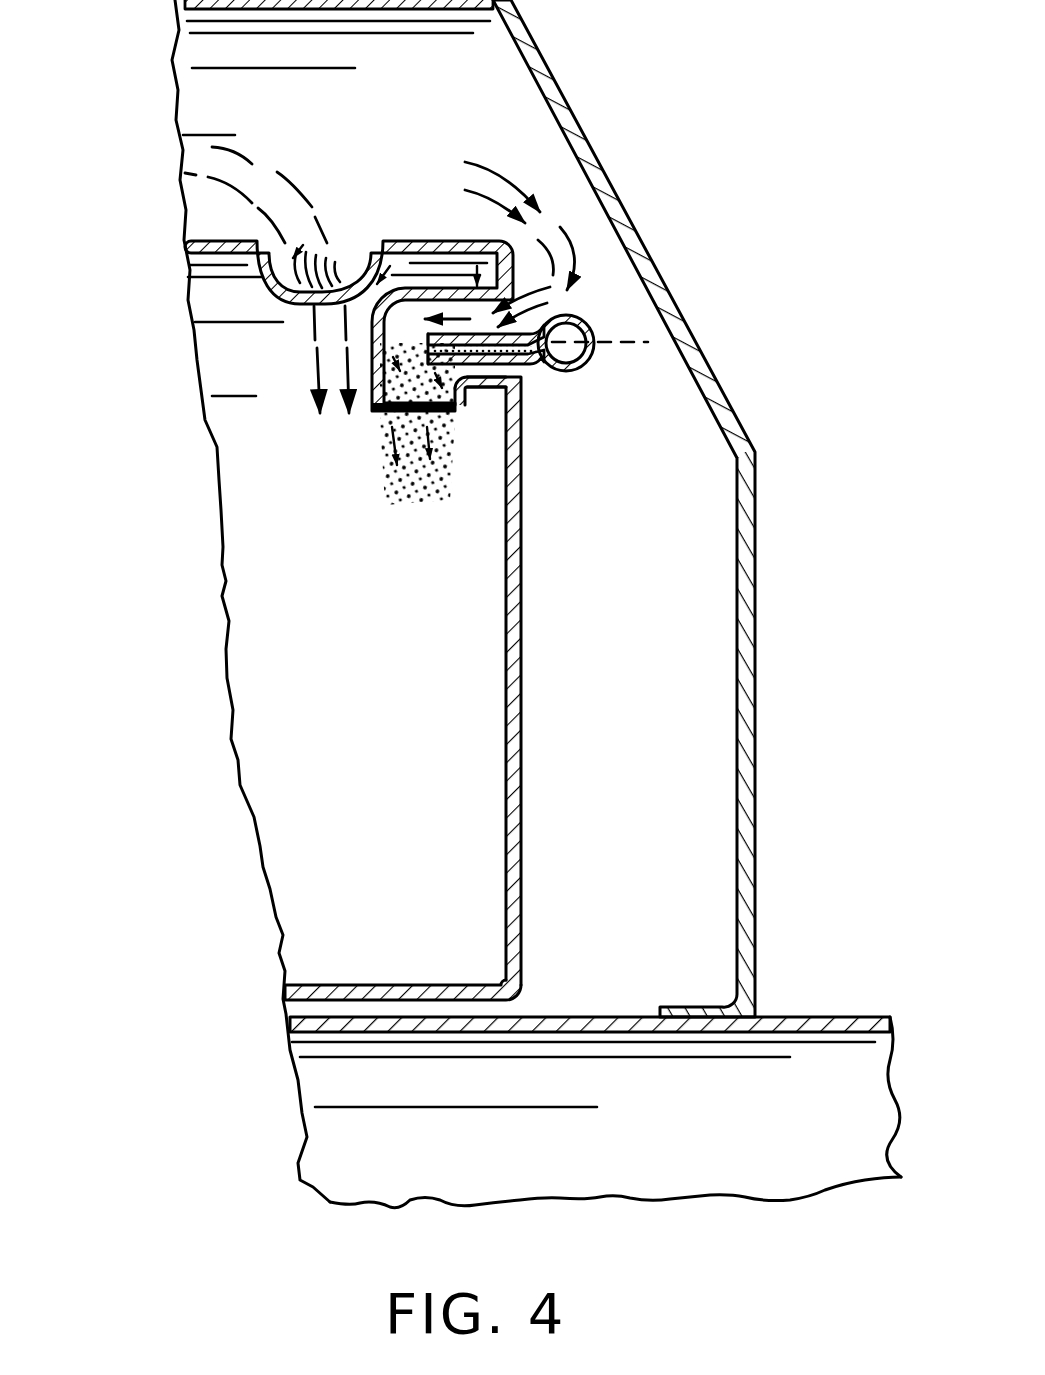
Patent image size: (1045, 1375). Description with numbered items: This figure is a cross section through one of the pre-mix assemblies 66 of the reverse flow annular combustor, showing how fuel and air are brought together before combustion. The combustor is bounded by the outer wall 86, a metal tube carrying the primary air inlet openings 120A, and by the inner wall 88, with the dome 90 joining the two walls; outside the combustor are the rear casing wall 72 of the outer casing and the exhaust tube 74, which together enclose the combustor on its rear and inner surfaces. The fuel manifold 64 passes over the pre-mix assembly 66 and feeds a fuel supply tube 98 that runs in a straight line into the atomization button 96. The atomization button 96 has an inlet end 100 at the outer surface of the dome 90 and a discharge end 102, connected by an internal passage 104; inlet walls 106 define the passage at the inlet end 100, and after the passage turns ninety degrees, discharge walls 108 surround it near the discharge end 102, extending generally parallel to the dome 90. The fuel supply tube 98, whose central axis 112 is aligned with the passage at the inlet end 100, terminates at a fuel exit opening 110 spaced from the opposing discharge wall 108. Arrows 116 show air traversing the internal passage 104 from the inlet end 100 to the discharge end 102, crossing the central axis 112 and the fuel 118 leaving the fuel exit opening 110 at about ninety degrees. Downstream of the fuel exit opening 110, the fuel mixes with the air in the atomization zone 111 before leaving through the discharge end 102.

The fuel manifold 64 is at (586, 323).
The pre-mix assembly 66 is at (483, 332).
The rear casing wall 72 is at (758, 772).
The exhaust tube 74 is at (808, 1017).
The outer wall 86 is at (200, 296).
The inner wall 88 is at (357, 988).
The dome 90 is at (517, 480).
The atomization button 96 is at (352, 262).
The fuel supply tube 98 is at (470, 320).
The inlet end 100 is at (517, 367).
The discharge end 102 is at (447, 402).
The internal passage 104 is at (480, 388).
The inlet walls 106 is at (515, 366).
The discharge walls 108 is at (365, 402).
The fuel exit opening 110 is at (373, 352).
The atomization zone 111 is at (427, 402).
The central axis 112 is at (633, 342).
The arrows 116 is at (373, 333).
The fuel 118 is at (427, 336).
The primary air inlet openings 120A is at (332, 262).